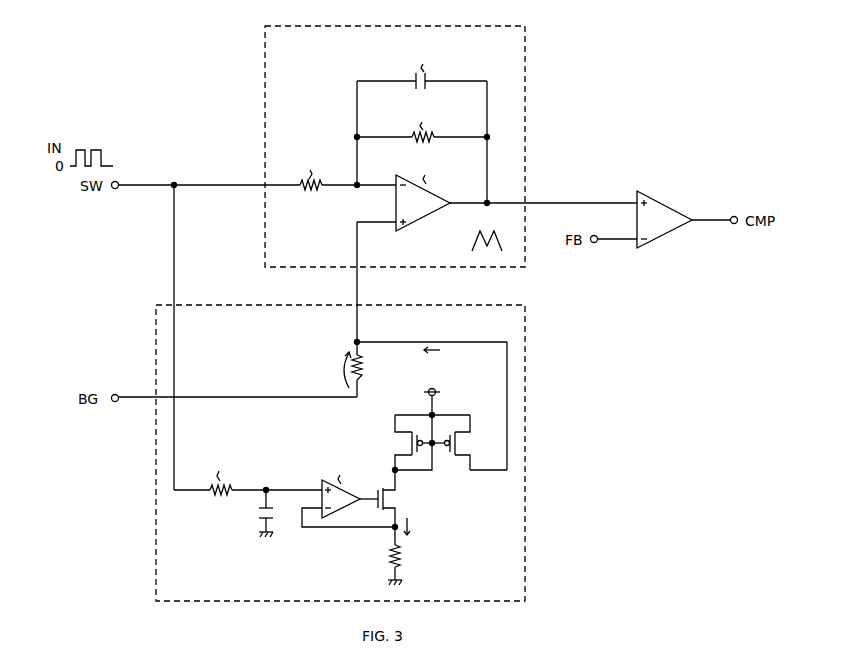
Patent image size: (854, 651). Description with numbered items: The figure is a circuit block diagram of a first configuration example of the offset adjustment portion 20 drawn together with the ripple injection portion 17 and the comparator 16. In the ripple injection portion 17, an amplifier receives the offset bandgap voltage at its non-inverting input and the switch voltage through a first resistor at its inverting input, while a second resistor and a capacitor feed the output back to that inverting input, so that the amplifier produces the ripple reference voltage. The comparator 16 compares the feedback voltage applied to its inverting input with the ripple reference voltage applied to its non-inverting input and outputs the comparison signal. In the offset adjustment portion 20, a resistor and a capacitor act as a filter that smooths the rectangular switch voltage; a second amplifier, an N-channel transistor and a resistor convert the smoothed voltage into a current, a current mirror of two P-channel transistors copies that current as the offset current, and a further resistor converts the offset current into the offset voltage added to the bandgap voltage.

The comparator 16 is at (684, 209).
The ripple injection portion 17 is at (451, 172).
The offset adjustment portion 20 is at (340, 441).